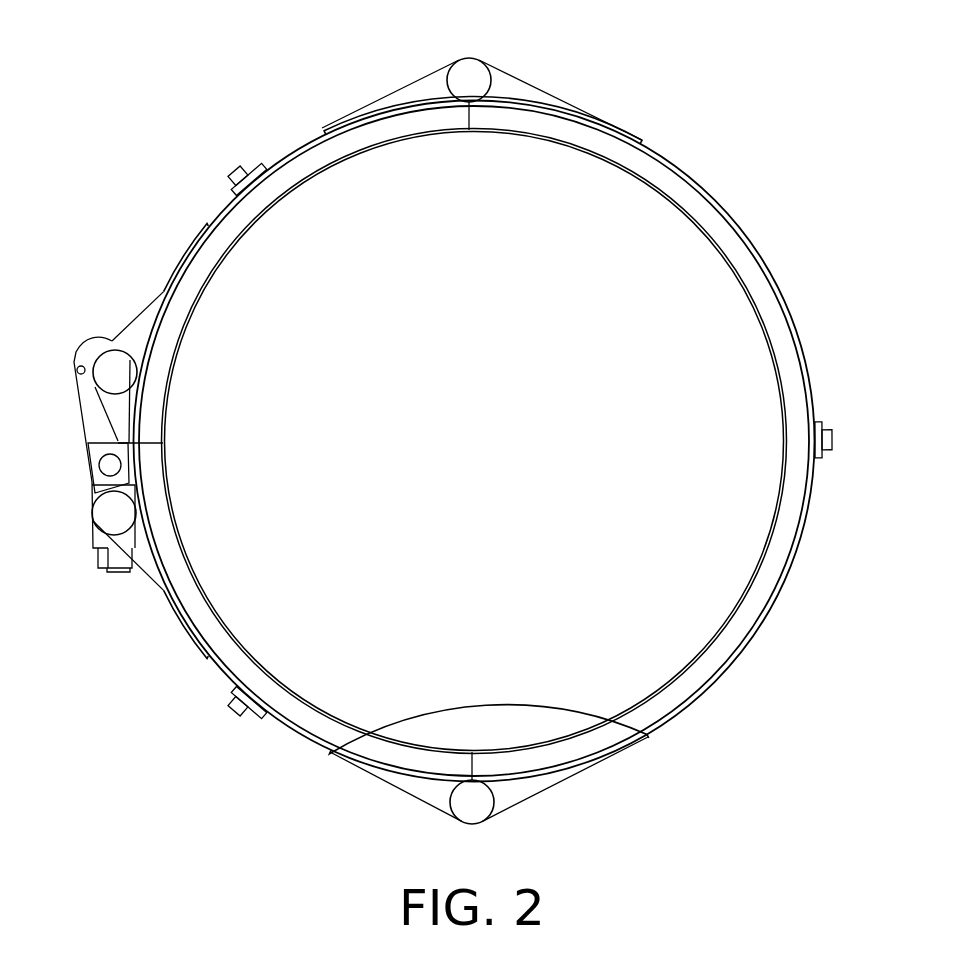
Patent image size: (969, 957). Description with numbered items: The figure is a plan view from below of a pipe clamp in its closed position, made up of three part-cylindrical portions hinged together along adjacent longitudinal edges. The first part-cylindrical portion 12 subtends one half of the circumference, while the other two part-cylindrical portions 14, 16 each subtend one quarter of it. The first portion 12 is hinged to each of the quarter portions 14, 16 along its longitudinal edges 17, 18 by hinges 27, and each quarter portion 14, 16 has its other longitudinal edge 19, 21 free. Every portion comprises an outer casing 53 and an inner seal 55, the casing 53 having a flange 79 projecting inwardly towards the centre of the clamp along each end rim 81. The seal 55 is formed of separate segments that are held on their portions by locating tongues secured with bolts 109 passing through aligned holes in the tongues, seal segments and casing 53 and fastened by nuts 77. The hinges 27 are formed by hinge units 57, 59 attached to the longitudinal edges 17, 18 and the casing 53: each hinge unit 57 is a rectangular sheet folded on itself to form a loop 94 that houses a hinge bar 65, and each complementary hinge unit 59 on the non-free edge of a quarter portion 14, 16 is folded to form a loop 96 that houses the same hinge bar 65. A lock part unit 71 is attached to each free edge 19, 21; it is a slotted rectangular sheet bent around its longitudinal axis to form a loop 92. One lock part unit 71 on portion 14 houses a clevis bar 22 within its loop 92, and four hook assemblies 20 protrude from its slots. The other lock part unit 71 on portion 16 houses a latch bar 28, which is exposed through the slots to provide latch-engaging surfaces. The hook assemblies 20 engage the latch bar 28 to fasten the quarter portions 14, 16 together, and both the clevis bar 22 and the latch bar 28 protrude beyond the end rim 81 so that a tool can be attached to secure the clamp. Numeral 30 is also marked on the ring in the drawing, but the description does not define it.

The first part-cylindrical portion 12 is at (490, 441).
The part-cylindrical portion 14 is at (472, 441).
The part-cylindrical portion 16 is at (480, 441).
The longitudinal edge 17 is at (484, 116).
The longitudinal edge 18 is at (487, 763).
The free longitudinal edge 19 is at (158, 408).
The hook assembly 20 is at (117, 454).
The free longitudinal edge 21 is at (153, 466).
The clevis bar 22 is at (98, 512).
The hinge 27 is at (470, 70).
The latch bar 28 is at (130, 375).
The ring portion 30 is at (472, 441).
The outer casing 53 is at (778, 596).
The inner seal 55 is at (472, 441).
The hinge unit 57 is at (609, 124).
The complementary hinge unit 59 is at (326, 125).
The hinge bar 65 is at (457, 441).
The lock part unit 71 is at (192, 236).
The nut 77 is at (553, 443).
The flange 79 is at (480, 441).
The end rim 81 is at (480, 441).
The loop 92 is at (134, 330).
The loop 94 is at (523, 85).
The loop 96 is at (412, 88).
The bolt 109 is at (836, 440).